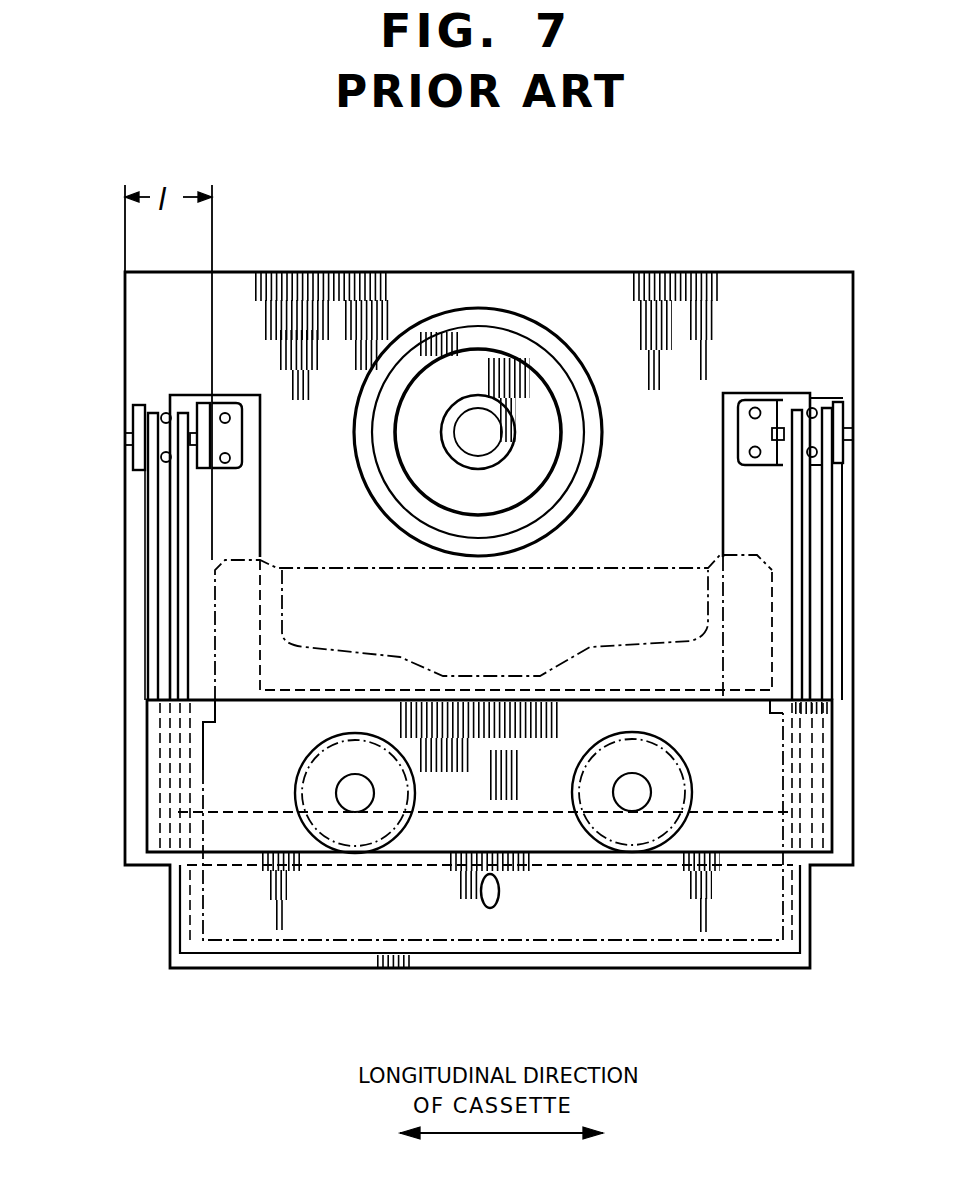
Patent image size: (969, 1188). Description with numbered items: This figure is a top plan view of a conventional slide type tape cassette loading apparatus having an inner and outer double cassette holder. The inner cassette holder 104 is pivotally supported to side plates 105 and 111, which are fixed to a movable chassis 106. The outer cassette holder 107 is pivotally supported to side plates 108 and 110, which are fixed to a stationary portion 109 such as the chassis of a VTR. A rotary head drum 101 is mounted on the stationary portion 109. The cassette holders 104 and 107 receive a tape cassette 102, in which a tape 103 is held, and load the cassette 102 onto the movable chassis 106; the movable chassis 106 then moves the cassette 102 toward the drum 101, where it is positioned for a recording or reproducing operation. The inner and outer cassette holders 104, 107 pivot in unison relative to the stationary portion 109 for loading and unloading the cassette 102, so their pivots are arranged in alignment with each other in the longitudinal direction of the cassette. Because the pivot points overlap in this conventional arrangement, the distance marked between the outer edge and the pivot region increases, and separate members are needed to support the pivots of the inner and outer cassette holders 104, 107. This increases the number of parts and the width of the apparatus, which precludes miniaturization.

The rotary head drum 101 is at (503, 338).
The tape cassette 102 is at (742, 568).
The tape 103 is at (555, 567).
The inner cassette holder 104 is at (188, 537).
The side plate 105 is at (238, 418).
The movable chassis 106 is at (243, 490).
The outer cassette holder 107 is at (152, 562).
The side plate 108 is at (148, 410).
The stationary portion 109 is at (137, 497).
The side plate 110 is at (823, 403).
The side plate 111 is at (767, 405).